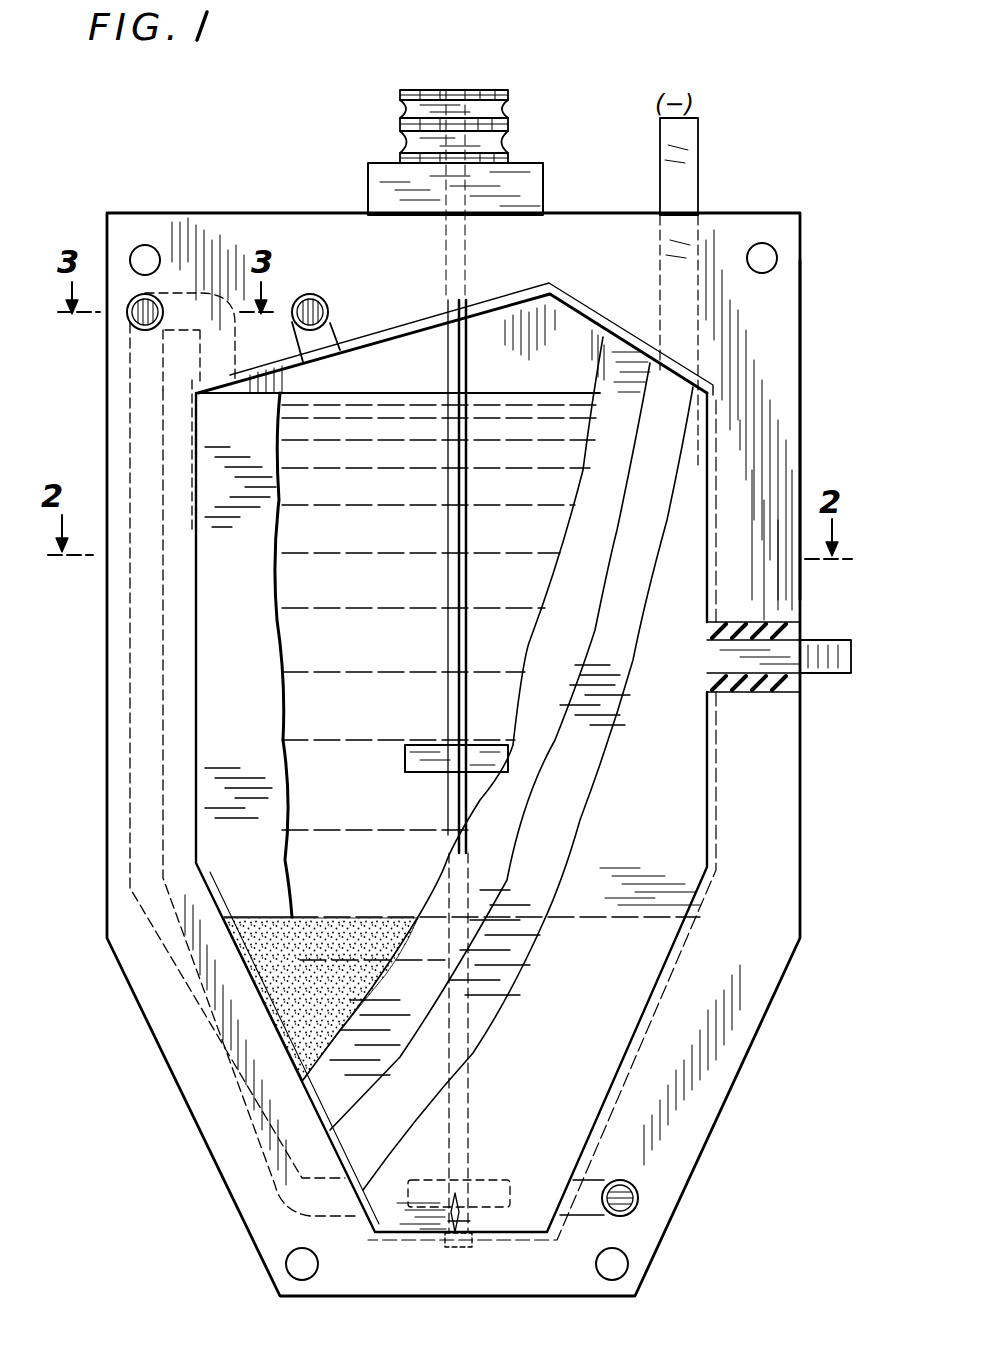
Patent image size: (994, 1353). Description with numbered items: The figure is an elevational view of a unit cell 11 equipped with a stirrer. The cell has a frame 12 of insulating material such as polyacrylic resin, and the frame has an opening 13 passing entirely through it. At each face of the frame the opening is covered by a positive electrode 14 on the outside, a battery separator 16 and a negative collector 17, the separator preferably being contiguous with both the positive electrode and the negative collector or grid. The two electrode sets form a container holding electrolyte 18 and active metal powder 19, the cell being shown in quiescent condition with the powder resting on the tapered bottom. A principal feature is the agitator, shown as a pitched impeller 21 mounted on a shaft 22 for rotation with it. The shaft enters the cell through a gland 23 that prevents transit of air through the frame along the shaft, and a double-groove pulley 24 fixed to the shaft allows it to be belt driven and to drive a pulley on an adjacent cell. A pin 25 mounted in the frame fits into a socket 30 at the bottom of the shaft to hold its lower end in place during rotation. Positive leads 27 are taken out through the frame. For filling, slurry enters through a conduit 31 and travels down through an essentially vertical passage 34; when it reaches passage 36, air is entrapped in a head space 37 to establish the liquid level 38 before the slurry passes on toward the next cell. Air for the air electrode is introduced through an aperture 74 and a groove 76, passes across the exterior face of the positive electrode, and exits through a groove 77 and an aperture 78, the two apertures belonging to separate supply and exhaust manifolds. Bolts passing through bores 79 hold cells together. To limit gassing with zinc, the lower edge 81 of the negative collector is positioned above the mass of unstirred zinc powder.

The unit cell 11 is at (812, 828).
The frame 12 is at (788, 336).
The opening 13 is at (708, 452).
The positive electrode 14 is at (687, 730).
The battery separator 16 is at (585, 765).
The negative collector 17 is at (220, 649).
The electrolyte 18 is at (300, 780).
The active metal powder 19 is at (277, 977).
The pitched impeller 21 is at (421, 744).
The shaft 22 is at (448, 580).
The gland 23 is at (543, 178).
The double-groove pulley 24 is at (507, 132).
The pin 25 is at (473, 1220).
The positive lead 27 is at (837, 641).
The socket 30 is at (455, 1183).
The conduit 31 is at (128, 317).
The vertical passage 34 is at (130, 852).
The passage 36 is at (200, 363).
The head space 37 is at (410, 340).
The liquid level 38 is at (367, 387).
The aperture 74 is at (307, 293).
The groove 76 is at (300, 342).
The groove 77 is at (588, 1182).
The aperture 78 is at (637, 1210).
The bore 79 is at (147, 250).
The lower edge 81 is at (252, 906).